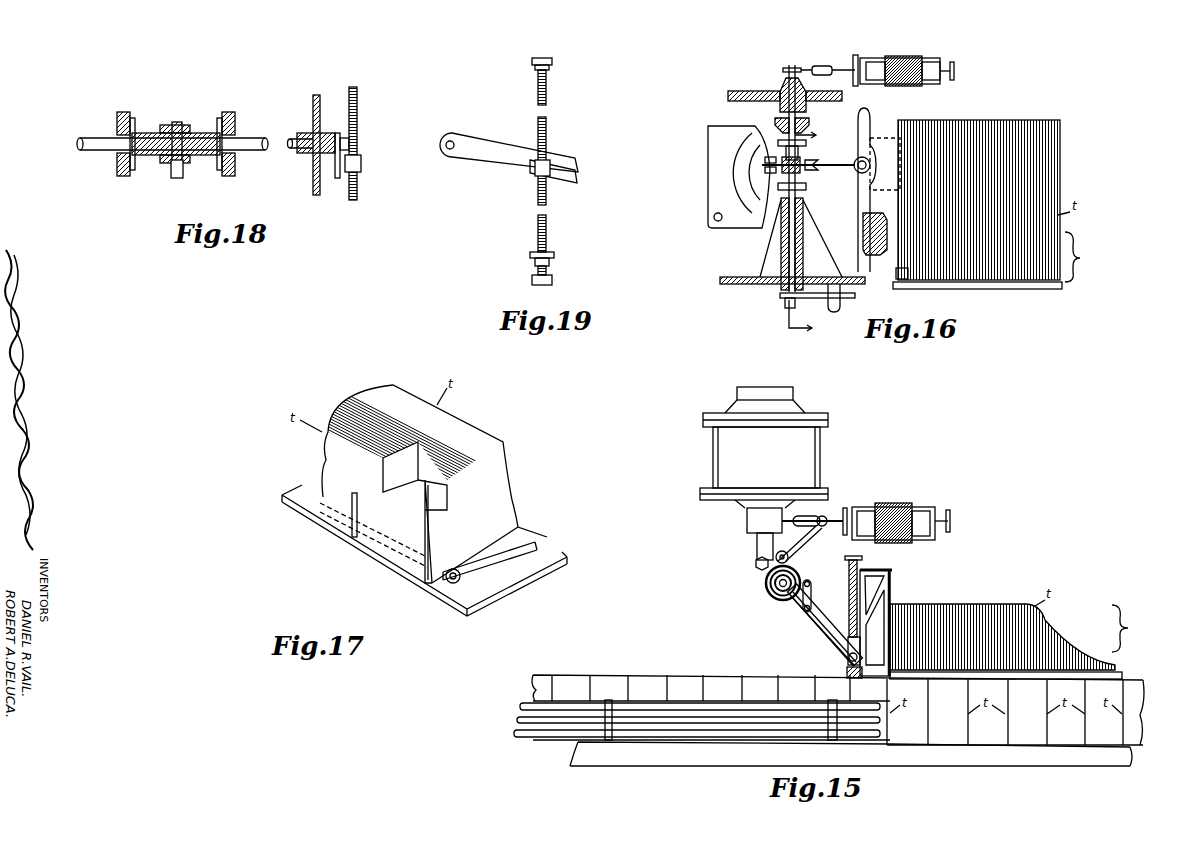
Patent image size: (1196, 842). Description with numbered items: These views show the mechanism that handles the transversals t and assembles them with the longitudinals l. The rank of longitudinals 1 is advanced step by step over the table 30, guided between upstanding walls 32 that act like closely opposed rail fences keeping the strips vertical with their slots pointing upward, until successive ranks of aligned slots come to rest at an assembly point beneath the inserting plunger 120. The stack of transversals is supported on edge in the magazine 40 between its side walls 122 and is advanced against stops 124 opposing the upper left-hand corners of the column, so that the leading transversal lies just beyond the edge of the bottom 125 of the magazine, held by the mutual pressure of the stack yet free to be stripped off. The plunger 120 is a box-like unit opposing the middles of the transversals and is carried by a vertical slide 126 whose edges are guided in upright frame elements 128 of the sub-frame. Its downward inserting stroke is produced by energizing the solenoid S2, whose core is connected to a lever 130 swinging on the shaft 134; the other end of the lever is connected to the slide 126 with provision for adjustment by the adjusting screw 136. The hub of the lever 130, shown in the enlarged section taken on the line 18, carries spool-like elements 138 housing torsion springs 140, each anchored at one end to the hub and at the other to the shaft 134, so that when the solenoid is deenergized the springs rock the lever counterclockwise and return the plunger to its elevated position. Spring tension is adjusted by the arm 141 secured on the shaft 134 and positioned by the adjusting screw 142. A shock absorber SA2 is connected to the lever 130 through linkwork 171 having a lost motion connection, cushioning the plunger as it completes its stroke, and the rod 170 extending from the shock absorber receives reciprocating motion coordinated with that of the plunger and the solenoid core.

In FIG. 15, the longitudinals 1 is at (572, 673).
In FIG. 16, the section line 18 is at (811, 232).
In FIG. 15, the table 30 is at (710, 767).
In FIG. 15, the upstanding walls 32 is at (518, 706).
In FIG. 16, the magazine 40 is at (1084, 257).
In FIG. 15, the magazine 40 is at (1021, 637).
In FIG. 16, the inserting plunger 120 is at (888, 190).
In FIG. 15, the inserting plunger 120 is at (892, 596).
In FIG. 16, the side walls 122 is at (1015, 288).
In FIG. 17, the side walls 122 is at (505, 490).
In FIG. 16, the stops 124 is at (896, 275).
In FIG. 17, the stops 124 is at (381, 476).
In FIG. 17, the bottom 125 is at (530, 578).
In FIG. 15, the bottom 125 is at (1122, 677).
In FIG. 16, the vertical slide 126 is at (870, 115).
In FIG. 15, the vertical slide 126 is at (848, 564).
In FIG. 16, the upright frame elements 128 is at (878, 262).
In FIG. 18, the lever 130 is at (182, 175).
In FIG. 16, the lever 130 is at (838, 160).
In FIG. 15, the lever 130 is at (808, 627).
In FIG. 18, the shaft 134 is at (263, 138).
In FIG. 19, the shaft 134 is at (455, 137).
In FIG. 16, the shaft 134 is at (787, 247).
In FIG. 15, the shaft 134 is at (757, 564).
In FIG. 15, the adjusting screw 136 is at (862, 560).
In FIG. 18, the spool-like elements 138 is at (135, 128).
In FIG. 18, the torsion springs 140 is at (117, 128).
In FIG. 16, the torsion springs 140 is at (807, 187).
In FIG. 15, the torsion springs 140 is at (766, 586).
In FIG. 18, the arm 141 is at (338, 178).
In FIG. 19, the arm 141 is at (495, 168).
In FIG. 18, the adjusting screw 142 is at (357, 110).
In FIG. 19, the adjusting screw 142 is at (547, 137).
In FIG. 16, the rod 170 is at (796, 69).
In FIG. 15, the rod 170 is at (790, 515).
In FIG. 15, the linkwork 171 is at (818, 575).
In FIG. 16, the solenoid S2 is at (728, 163).
In FIG. 15, the solenoid S2 is at (822, 450).
In FIG. 16, the shock absorber SA2 is at (958, 62).
In FIG. 15, the shock absorber SA2 is at (908, 514).